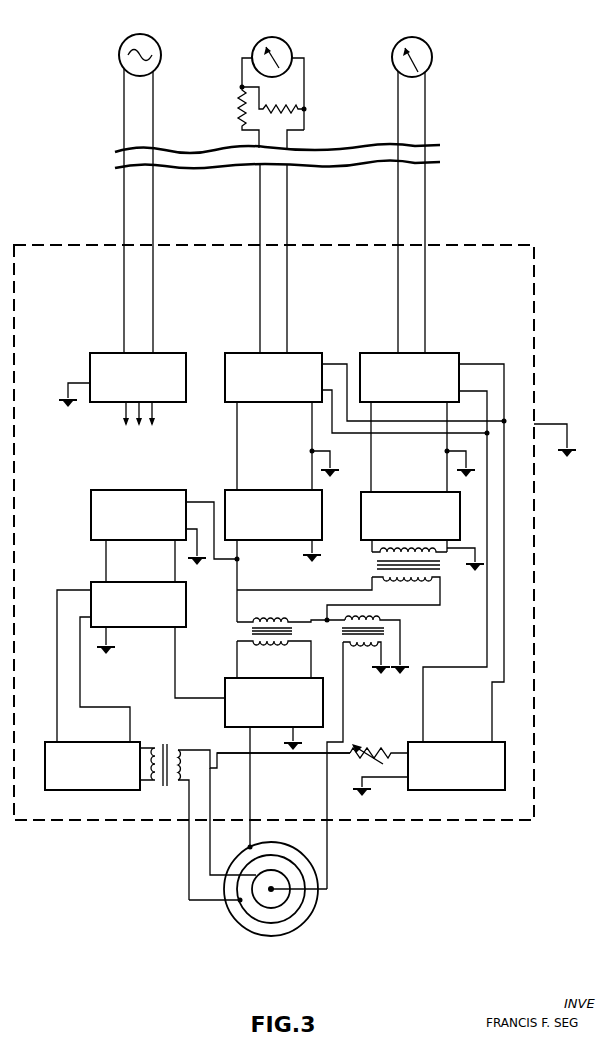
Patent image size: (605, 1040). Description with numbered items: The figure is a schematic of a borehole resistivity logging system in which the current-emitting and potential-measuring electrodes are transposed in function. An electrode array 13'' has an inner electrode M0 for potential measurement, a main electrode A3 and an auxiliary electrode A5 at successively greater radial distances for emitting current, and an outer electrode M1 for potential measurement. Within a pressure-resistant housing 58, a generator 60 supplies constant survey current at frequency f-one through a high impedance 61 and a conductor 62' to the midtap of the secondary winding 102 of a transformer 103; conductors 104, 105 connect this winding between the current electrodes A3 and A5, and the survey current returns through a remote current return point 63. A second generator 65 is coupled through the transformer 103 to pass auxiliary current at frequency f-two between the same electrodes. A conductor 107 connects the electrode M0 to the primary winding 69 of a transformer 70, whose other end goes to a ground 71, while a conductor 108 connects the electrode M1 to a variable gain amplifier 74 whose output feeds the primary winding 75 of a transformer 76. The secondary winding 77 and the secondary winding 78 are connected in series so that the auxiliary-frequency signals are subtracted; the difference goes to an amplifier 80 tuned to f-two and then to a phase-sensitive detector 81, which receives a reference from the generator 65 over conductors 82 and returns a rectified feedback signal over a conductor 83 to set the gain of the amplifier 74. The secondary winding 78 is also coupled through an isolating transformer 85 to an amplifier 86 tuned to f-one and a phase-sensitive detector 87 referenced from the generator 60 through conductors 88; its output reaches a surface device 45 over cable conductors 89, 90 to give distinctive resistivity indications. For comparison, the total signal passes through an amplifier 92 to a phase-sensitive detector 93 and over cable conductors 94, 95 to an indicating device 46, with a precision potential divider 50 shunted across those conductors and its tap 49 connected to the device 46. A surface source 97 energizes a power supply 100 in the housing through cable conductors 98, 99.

The source of electrical energy 97 is at (121, 47).
The indicating device 46 is at (288, 46).
The device 45 is at (431, 55).
The tap 49 is at (240, 87).
The precision potential divider 50 is at (240, 108).
The cable conductor 98 is at (124, 236).
The cable conductor 99 is at (153, 236).
The cable conductor 94 is at (260, 236).
The cable conductor 95 is at (287, 236).
The cable conductor 89 is at (398, 236).
The cable conductor 90 is at (425, 236).
The power supply 100 is at (112, 352).
The phase-sensitive detector 93 is at (252, 352).
The phase-sensitive detector 87 is at (386, 352).
The conductors 88 is at (487, 571).
The amplifier 80 is at (152, 489).
The amplifier 92 is at (300, 489).
The amplifier 86 is at (430, 491).
The isolating transformer 85 is at (375, 563).
The phase-sensitive detector 81 is at (188, 616).
The conductors 82 is at (80, 684).
The conductor 83 is at (175, 678).
The transformer 76 is at (270, 637).
The secondary winding 78 is at (268, 620).
The primary winding 75 is at (284, 645).
The transformer 70 is at (373, 651).
The secondary winding 77 is at (350, 623).
The primary winding 69 is at (358, 651).
The ground 71 is at (385, 671).
The variable gain amplifier 74 is at (232, 678).
The conductor 108 is at (252, 782).
The generator 65 is at (122, 741).
The transformer 103 is at (245, 807).
The secondary winding 102 is at (184, 772).
The conductor 104 is at (210, 863).
The conductor 105 is at (188, 847).
The conductor 107 is at (345, 714).
The conductor 62' is at (283, 770).
The high impedance 61 is at (370, 750).
The generator 60 is at (445, 741).
The current return point 63 is at (367, 791).
The pressure-resistant housing 58 is at (535, 652).
The electrode array 13'' is at (269, 899).
The electrode M1 is at (232, 918).
The inner electrode M0 is at (276, 897).
The main electrode A3 is at (272, 913).
The auxiliary electrode A5 is at (257, 924).